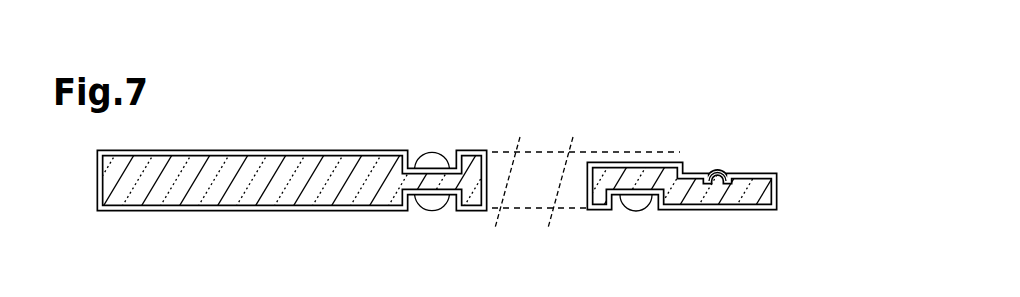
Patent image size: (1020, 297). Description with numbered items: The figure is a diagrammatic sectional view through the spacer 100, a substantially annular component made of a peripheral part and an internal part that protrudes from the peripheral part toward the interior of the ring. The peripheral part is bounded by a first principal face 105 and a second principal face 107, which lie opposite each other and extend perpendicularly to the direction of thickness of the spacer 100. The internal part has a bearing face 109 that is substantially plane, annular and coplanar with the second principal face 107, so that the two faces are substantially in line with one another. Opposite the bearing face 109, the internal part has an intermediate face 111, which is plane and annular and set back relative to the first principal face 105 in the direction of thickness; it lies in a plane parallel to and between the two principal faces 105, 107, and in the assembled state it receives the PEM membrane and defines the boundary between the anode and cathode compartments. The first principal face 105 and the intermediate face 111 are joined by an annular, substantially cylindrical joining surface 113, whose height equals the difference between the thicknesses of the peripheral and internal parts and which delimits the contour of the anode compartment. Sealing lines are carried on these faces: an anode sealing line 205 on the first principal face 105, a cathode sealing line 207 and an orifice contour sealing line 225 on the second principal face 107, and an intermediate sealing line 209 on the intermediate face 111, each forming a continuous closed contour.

The spacer 100 is at (353, 110).
The first principal face 105 is at (262, 151).
The second principal face 107 is at (328, 212).
The anode sealing line 205 is at (426, 149).
The orifice contour sealing line 225 is at (425, 214).
The bearing face 109 is at (737, 209).
The cathode sealing line 207 is at (641, 200).
The joining surface 113 is at (688, 171).
The intermediate face 111 is at (701, 172).
The intermediate sealing line 209 is at (721, 167).